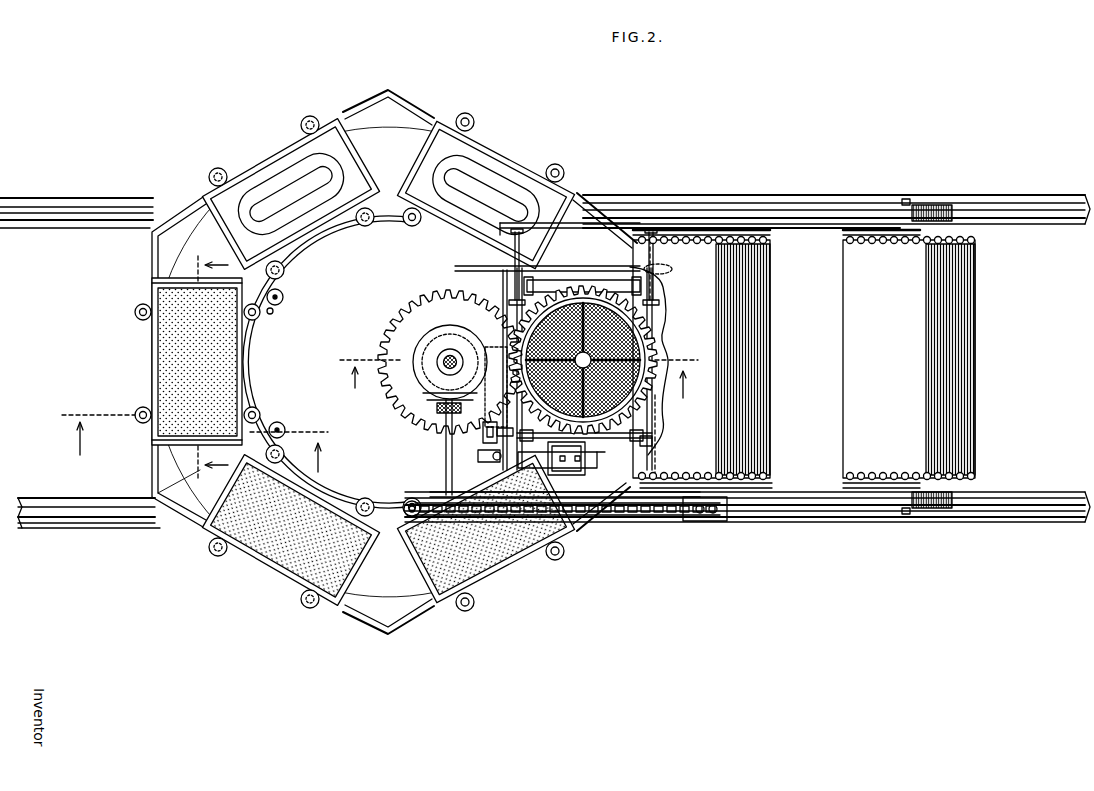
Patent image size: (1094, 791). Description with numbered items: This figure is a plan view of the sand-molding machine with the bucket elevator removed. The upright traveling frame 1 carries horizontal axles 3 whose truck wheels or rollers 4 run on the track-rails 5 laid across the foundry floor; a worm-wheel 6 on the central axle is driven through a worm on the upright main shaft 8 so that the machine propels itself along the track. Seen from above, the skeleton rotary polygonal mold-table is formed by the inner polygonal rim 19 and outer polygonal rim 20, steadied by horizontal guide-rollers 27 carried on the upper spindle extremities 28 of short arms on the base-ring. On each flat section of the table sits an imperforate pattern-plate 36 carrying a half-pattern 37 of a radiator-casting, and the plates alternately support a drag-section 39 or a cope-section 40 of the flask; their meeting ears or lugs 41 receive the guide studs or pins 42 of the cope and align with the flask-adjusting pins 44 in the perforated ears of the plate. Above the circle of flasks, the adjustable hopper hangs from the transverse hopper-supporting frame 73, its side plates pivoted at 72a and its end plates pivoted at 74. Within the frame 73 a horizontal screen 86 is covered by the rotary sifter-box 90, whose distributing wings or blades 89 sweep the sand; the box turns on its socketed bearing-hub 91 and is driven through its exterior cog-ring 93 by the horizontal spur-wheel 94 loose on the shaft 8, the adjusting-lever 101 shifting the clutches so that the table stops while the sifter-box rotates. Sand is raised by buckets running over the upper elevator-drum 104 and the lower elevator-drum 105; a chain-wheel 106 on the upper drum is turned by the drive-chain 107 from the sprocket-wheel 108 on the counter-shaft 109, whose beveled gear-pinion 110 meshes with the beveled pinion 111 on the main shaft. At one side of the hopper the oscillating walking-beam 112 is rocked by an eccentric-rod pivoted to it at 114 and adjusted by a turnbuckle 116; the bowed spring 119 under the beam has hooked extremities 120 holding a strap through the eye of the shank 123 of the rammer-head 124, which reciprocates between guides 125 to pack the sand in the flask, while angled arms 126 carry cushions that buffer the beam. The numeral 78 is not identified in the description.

The upright traveling frame 1 is at (691, 226).
The horizontal axles 3 is at (908, 200).
The truck wheels or rollers 4 is at (942, 205).
The track-rails 5 is at (60, 206).
The worm-wheel 6 is at (210, 368).
The upright main shaft 8 is at (450, 356).
The inner polygonal rim 19 is at (388, 186).
The outer polygonal rim 20 is at (381, 103).
The horizontal guide-rollers 27 is at (284, 297).
The upper spindle extremities 28 is at (278, 313).
The pattern-plate 36 is at (524, 185).
The half-pattern 37 is at (487, 178).
The drag-section 39 is at (505, 153).
The cope-section 40 is at (262, 166).
The meeting ears or lugs 41 is at (313, 116).
The guide studs or pins 42 is at (216, 170).
The flask-adjusting pins 44 is at (473, 122).
The pivotal suspension of side plates 72a is at (515, 280).
The transverse hopper-supporting frame 73 is at (658, 394).
The pivotal suspension of end plates 74 is at (566, 258).
The corner plate 78 is at (183, 530).
The horizontal screen 86 is at (665, 305).
The distributing wings or blades 89 is at (487, 354).
The rotary sifter-box 90 is at (669, 351).
The socketed bearing-hub 91 is at (583, 360).
The exterior cog-ring 93 is at (666, 320).
The horizontal spur-wheel 94 is at (450, 362).
The adjusting-lever 101 is at (548, 265).
The upper elevator-drum 104 is at (772, 393).
The lower elevator-drum 105 is at (866, 334).
The chain-wheel 106 is at (712, 522).
The drive-chain 107 is at (620, 521).
The sprocket-wheel 108 is at (423, 500).
The counter-shaft 109 is at (446, 463).
The beveled gear-pinion 110 is at (437, 408).
The beveled pinion 111 is at (436, 341).
The oscillating walking-beam 112 is at (566, 456).
The pivotal connection 114 is at (481, 456).
The turnbuckle 116 is at (483, 434).
The bowed spring 119 is at (597, 458).
The hooked extremities 120 is at (597, 468).
The shank 123 is at (553, 476).
The rammer-head 124 is at (597, 481).
The guides 125 is at (545, 505).
The angled arms 126 is at (557, 459).